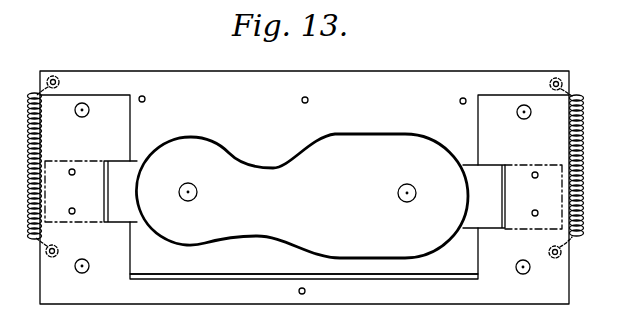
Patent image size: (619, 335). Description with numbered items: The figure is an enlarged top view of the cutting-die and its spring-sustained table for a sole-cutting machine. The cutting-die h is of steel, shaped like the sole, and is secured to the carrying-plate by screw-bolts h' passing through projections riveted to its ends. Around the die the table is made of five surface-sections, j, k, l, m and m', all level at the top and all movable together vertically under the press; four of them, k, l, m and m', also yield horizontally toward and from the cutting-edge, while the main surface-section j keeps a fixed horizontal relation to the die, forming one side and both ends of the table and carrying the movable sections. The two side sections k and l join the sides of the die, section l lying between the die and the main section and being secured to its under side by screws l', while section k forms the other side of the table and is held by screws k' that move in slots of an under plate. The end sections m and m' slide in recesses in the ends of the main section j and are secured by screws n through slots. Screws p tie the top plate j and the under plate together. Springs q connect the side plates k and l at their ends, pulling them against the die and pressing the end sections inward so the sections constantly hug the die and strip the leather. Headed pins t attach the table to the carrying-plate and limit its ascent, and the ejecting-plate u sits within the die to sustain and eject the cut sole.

The cutting-die h is at (302, 187).
The screw-bolts h' is at (456, 100).
The main surface-section j is at (304, 198).
The side surface-section k is at (304, 187).
The screws k' is at (232, 98).
The side surface-section l is at (304, 260).
The screws l' is at (307, 292).
The end surface-section m is at (120, 191).
The end surface-section m' is at (484, 196).
The screws n is at (303, 195).
The screws p is at (304, 175).
The springs q is at (302, 166).
The headed pins t is at (308, 188).
The ejecting-plate u is at (297, 189).